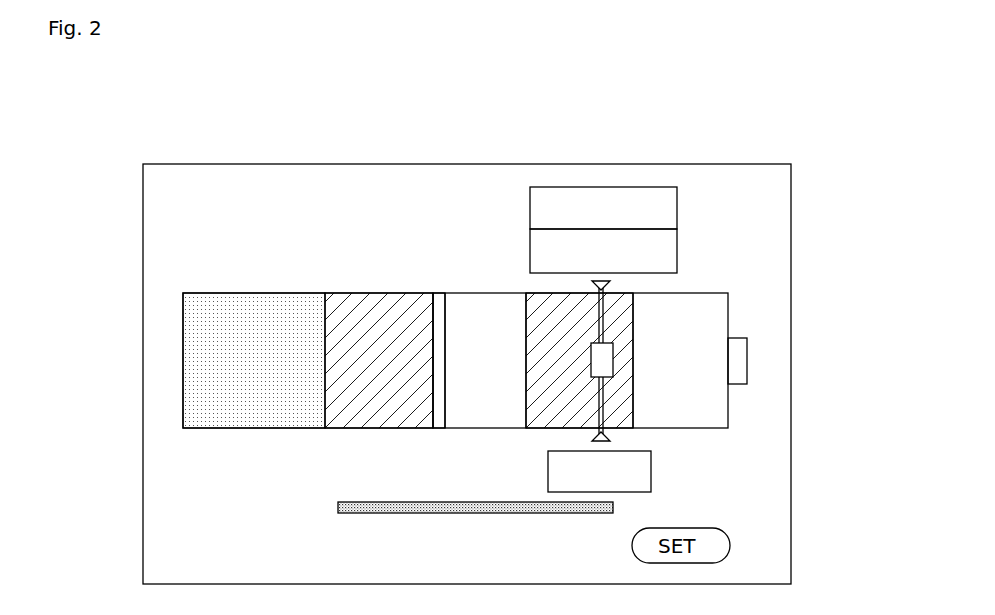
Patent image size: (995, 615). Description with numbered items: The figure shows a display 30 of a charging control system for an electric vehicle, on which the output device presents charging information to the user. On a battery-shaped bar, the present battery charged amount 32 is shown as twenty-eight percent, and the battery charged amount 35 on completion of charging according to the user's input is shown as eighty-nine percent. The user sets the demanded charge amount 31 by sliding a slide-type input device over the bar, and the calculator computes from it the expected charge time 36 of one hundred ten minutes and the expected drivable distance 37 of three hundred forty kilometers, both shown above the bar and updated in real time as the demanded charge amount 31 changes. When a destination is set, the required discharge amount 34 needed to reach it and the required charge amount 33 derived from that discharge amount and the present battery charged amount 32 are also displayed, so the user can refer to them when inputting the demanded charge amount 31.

The display 30 is at (250, 164).
The demanded charge amount 31 is at (603, 311).
The present battery charged amount 32 is at (202, 389).
The required charge amount 33 is at (383, 318).
The required discharge amount 34 is at (443, 333).
The battery charged amount on completion of charging 35 is at (651, 468).
The expected charge time 36 is at (677, 249).
The expected drivable distance 37 is at (628, 187).